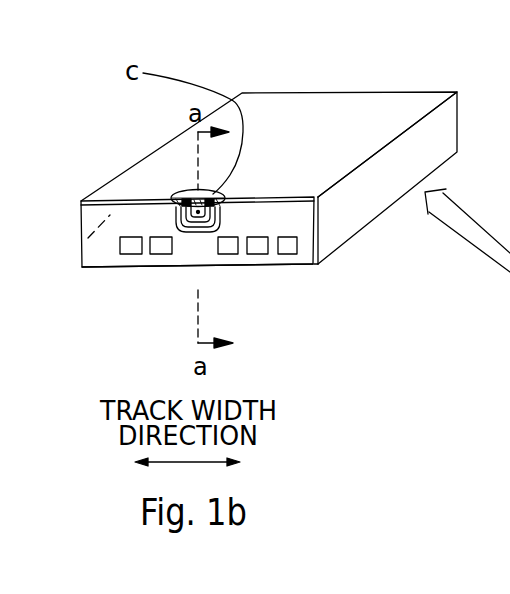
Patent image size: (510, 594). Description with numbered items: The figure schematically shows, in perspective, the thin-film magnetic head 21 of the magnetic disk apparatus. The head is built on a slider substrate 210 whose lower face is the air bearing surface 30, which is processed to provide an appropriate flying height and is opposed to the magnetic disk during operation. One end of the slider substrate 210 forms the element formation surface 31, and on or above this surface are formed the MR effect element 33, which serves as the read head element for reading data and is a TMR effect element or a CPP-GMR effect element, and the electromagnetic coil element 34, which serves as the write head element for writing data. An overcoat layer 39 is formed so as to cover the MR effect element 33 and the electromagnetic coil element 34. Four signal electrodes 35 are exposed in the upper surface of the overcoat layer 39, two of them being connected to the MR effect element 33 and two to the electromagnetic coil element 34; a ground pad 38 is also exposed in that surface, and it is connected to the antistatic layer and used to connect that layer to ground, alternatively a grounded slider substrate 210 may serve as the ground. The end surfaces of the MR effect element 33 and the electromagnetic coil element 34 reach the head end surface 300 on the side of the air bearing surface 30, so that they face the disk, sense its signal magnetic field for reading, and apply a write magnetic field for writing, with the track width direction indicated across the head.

The thin-film magnetic head 21 is at (248, 188).
The air bearing surface 30 is at (267, 108).
The MR effect element 33 is at (195, 191).
The electromagnetic coil element 34 is at (178, 220).
The head end surface 300 is at (266, 196).
The slider substrate 210 is at (352, 208).
The element formation surface 31 is at (86, 241).
The signal electrodes 35 is at (161, 254).
The ground pad 38 is at (289, 254).
The overcoat layer 39 is at (103, 247).